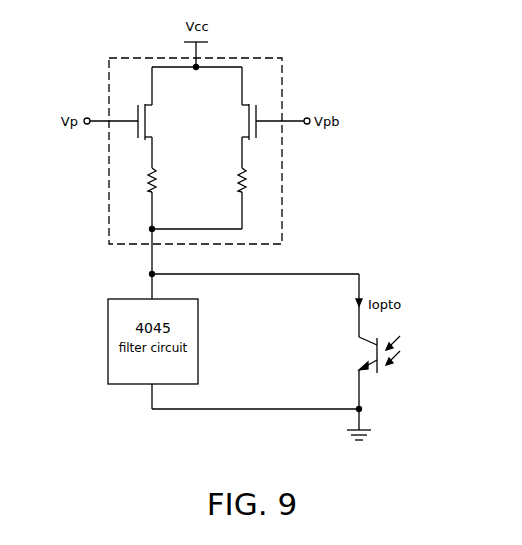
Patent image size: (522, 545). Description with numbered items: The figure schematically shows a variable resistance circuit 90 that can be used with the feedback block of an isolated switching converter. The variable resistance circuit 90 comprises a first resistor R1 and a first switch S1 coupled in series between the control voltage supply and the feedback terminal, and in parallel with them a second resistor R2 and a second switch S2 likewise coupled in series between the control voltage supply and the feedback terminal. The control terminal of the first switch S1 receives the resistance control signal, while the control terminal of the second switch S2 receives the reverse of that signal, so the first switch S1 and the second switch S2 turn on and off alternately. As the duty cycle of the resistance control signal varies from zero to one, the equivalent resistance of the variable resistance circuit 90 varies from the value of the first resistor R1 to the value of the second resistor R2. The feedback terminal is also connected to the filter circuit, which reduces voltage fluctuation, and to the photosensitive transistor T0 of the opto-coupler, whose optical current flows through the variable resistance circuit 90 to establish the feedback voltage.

The variable resistance circuit 90 is at (286, 87).
The first switch S1 is at (158, 117).
The second switch S2 is at (235, 117).
The first resistor R1 is at (137, 180).
The second resistor R2 is at (255, 180).
The photosensitive transistor T0 is at (369, 372).